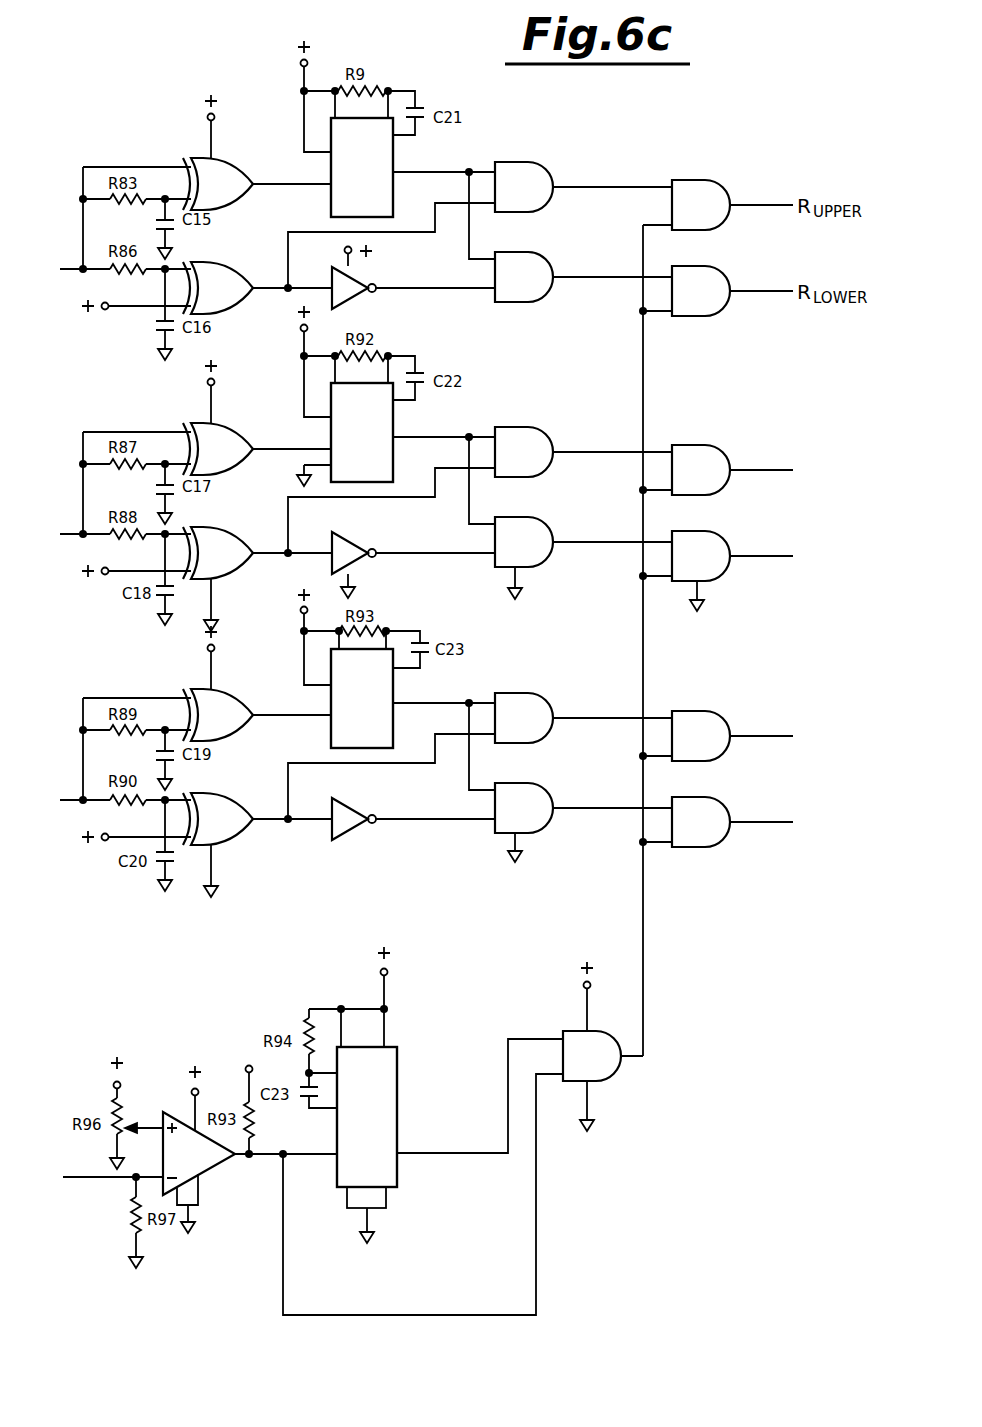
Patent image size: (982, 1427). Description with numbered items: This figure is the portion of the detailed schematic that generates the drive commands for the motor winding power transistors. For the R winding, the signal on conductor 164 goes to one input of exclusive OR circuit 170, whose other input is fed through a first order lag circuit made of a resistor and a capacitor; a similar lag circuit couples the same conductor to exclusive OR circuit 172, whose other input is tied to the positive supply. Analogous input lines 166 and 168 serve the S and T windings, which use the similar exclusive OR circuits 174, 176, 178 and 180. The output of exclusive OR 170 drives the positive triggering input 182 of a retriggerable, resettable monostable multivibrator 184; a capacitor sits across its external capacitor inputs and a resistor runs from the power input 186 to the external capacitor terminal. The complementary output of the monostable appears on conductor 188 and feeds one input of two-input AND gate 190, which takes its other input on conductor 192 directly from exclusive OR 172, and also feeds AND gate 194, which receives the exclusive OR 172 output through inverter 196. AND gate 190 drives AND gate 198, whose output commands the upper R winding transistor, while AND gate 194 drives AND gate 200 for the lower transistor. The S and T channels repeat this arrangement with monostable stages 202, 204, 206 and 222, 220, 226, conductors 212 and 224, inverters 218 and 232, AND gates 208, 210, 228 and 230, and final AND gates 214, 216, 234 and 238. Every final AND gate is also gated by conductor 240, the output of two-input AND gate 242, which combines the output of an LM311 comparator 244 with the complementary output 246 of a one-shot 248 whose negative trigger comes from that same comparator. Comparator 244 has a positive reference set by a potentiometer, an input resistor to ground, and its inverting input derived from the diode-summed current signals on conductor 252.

The conductor 164 is at (72, 273).
The input line 166 is at (84, 572).
The input line 168 is at (85, 843).
The exclusive OR circuit 170 is at (233, 159).
The exclusive OR circuit 172 is at (222, 264).
The exclusive OR circuit 174 is at (236, 417).
The exclusive OR circuit 176 is at (229, 560).
The exclusive OR circuit 178 is at (232, 683).
The exclusive OR circuit 180 is at (228, 825).
The positive triggering input 182 is at (326, 189).
The monostable multivibrator 184 is at (396, 152).
The power input 186 is at (335, 88).
The conductor 188 is at (451, 170).
The two-input AND gate 190 is at (541, 165).
The conductor 192 is at (397, 235).
The AND gate 194 is at (541, 259).
The inverter 196 is at (353, 291).
The AND gate 198 is at (710, 181).
The AND gate 200 is at (718, 266).
The monostable multivibrator 202 is at (330, 432).
The timing network 204 is at (419, 393).
The output node 206 is at (458, 454).
The AND gate 208 is at (583, 439).
The AND gate 210 is at (583, 547).
The conductor 212 is at (389, 512).
The AND gate 214 is at (716, 456).
The AND gate 216 is at (716, 559).
The inverter 218 is at (413, 565).
The timing network 220 is at (419, 661).
The monostable multivibrator 222 is at (326, 700).
The resistor 224 is at (332, 603).
The output node 226 is at (457, 721).
The AND gate 228 is at (583, 707).
The AND gate 230 is at (583, 810).
The inverter 232 is at (413, 833).
The AND gate 234 is at (716, 718).
The AND gate 238 is at (716, 809).
The conductor 240 is at (652, 932).
The two-input AND gate 242 is at (618, 1082).
The comparator 244 is at (207, 1168).
The complementary output 246 is at (398, 1152).
The one-shot 248 is at (398, 1105).
The conductor 252 is at (90, 1180).